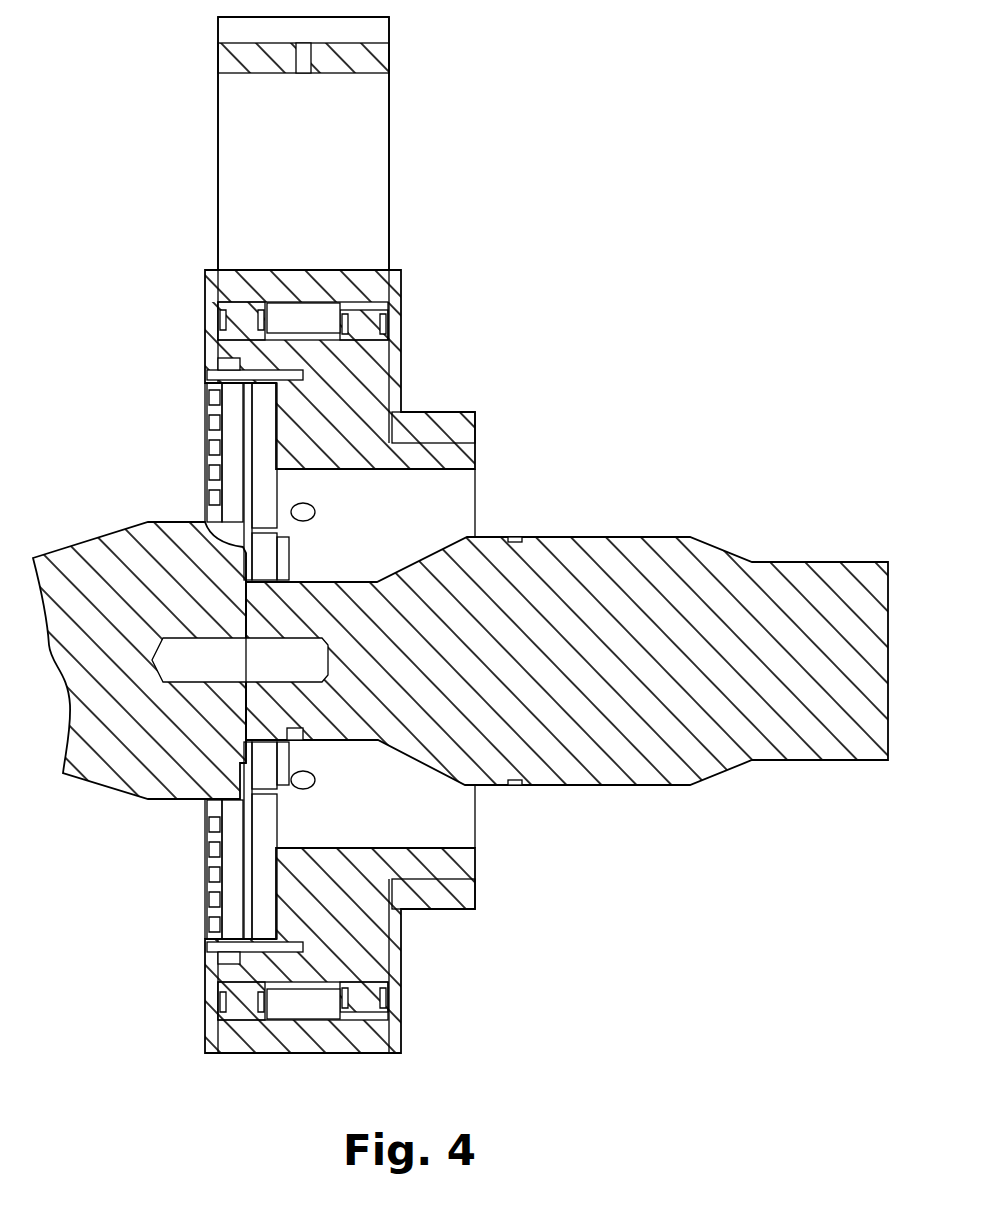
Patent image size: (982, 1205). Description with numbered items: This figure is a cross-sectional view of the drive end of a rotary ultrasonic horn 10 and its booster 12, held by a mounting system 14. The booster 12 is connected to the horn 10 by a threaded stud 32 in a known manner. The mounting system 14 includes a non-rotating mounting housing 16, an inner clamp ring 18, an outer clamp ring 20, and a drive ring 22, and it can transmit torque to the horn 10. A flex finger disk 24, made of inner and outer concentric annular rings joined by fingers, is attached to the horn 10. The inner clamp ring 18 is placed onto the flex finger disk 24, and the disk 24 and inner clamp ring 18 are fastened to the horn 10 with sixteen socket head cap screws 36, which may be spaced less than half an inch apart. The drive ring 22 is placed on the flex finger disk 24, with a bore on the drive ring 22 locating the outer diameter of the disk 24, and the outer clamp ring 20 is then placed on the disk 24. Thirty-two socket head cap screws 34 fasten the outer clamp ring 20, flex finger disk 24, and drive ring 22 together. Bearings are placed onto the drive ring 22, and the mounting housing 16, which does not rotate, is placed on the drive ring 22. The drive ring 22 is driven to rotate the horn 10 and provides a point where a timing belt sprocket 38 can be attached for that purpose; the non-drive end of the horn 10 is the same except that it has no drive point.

The rotary ultrasonic horn 10 is at (90, 541).
The booster 12 is at (664, 548).
The mounting system 14 is at (451, 326).
The mounting housing 16 is at (380, 53).
The inner clamp ring 18 is at (260, 547).
The outer clamp ring 20 is at (233, 422).
The drive ring 22 is at (372, 383).
The flex finger disk 24 is at (243, 457).
The threaded stud 32 is at (192, 667).
The socket head cap screws 34 is at (235, 375).
The socket head cap screws 36 is at (289, 546).
The timing belt sprocket 38 is at (440, 860).